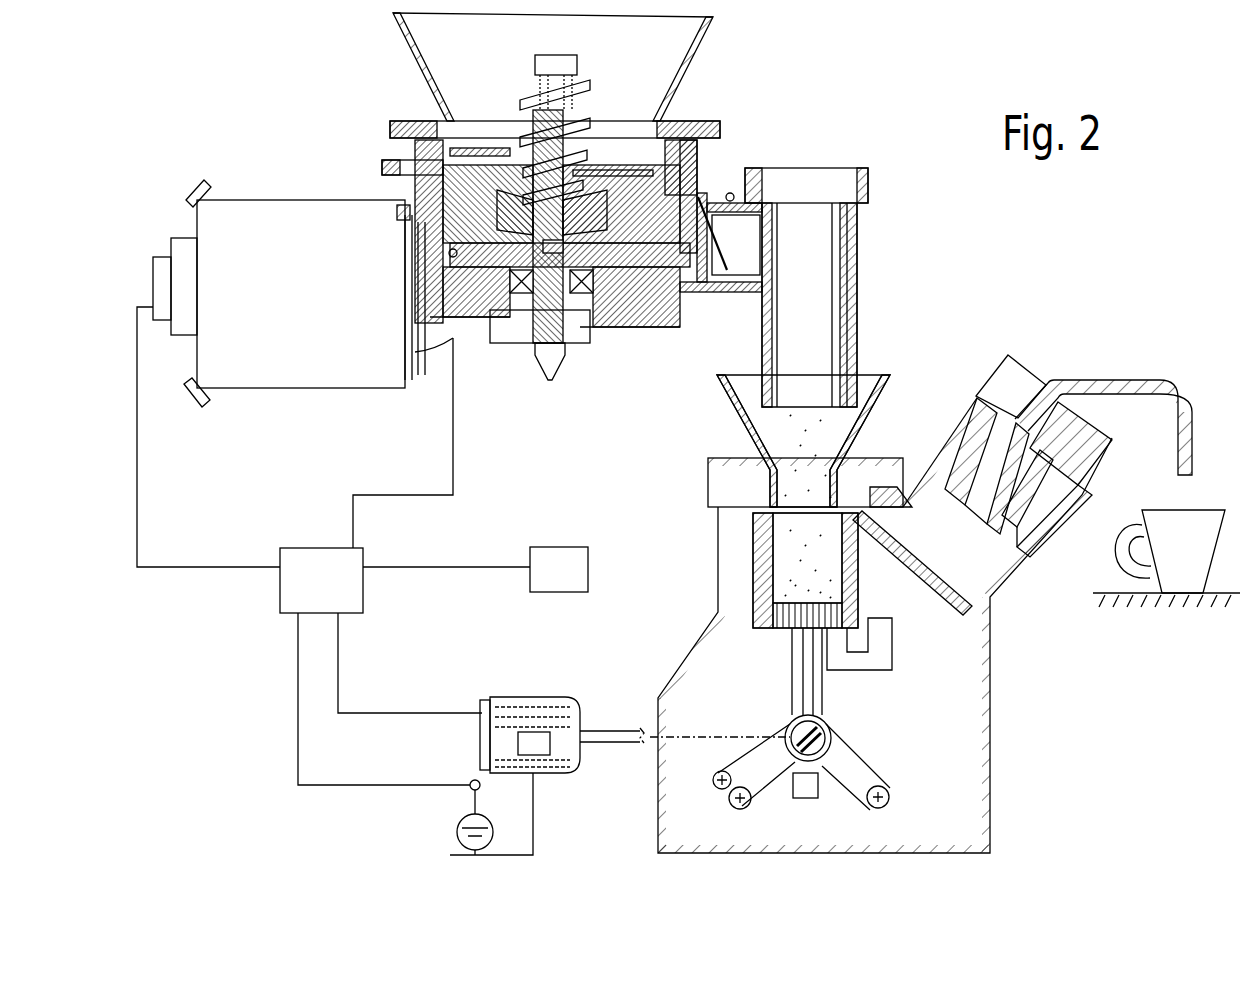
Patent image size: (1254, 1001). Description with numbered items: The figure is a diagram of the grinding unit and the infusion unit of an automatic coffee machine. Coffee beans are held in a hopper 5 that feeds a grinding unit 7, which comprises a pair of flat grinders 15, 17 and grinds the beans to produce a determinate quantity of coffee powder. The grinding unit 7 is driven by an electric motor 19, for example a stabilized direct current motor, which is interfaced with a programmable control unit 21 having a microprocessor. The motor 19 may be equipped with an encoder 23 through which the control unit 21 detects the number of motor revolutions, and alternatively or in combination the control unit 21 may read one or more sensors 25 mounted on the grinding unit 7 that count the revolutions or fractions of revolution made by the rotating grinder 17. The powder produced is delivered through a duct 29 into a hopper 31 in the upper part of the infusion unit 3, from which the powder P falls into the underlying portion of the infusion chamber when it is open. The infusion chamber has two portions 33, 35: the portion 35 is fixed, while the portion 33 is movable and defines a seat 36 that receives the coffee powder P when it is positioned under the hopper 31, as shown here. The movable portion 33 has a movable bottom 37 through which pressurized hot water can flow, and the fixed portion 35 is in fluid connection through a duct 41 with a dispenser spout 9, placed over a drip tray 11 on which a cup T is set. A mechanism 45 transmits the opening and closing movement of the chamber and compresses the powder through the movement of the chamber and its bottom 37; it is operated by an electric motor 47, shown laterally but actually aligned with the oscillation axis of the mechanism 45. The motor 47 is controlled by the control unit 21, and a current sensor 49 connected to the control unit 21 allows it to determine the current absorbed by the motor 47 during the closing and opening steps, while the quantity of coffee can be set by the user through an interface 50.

The infusion unit 3 is at (924, 386).
The hopper 5 is at (700, 40).
The grinding unit 7 is at (349, 170).
The spouts 9 is at (1192, 445).
The drip tray 11 is at (1115, 593).
The grinder 15 is at (703, 205).
The rotating grinder 17 is at (655, 216).
The electric motor 19 is at (272, 213).
The control unit 21 is at (318, 548).
The encoder 23 is at (160, 270).
The sensors 25 is at (449, 255).
The duct 29 is at (850, 243).
The hopper 31 is at (736, 407).
The movable portion of the infusion chamber 33 is at (752, 588).
The fixed portion of the infusion chamber 35 is at (1012, 524).
The seat 36 is at (754, 537).
The movable bottom 37 is at (858, 575).
The duct 41 is at (1113, 378).
The mechanism 45 is at (858, 762).
The electric motor 47 is at (545, 700).
The current sensor 49 is at (465, 781).
The interface 50 is at (565, 560).
The cups T is at (1160, 520).
The coffee powder P is at (873, 385).